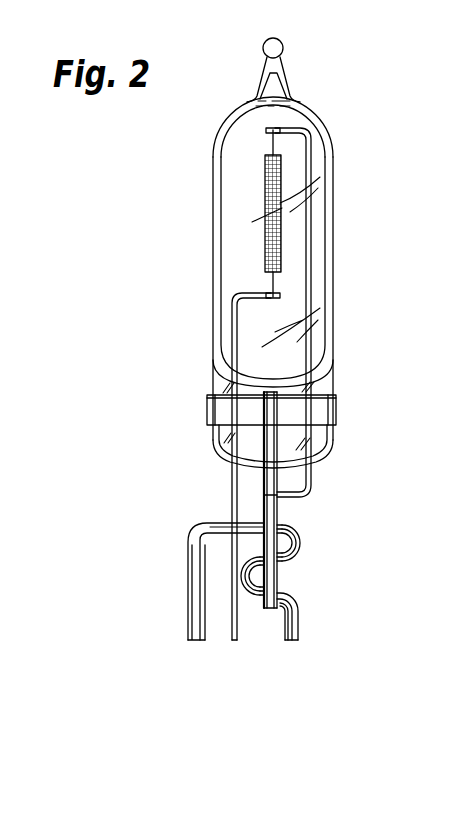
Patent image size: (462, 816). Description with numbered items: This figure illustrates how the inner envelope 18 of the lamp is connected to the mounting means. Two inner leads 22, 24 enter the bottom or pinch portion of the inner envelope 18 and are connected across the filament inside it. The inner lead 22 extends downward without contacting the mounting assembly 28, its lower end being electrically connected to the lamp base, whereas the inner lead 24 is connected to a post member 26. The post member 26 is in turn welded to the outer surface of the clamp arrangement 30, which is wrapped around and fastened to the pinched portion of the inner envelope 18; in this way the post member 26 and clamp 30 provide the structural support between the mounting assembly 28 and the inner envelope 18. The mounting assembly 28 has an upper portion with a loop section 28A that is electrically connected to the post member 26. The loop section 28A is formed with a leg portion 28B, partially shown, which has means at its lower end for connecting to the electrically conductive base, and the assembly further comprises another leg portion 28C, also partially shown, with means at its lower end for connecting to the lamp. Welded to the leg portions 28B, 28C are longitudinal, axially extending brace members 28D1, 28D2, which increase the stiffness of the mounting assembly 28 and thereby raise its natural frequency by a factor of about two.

The inner envelope 18 is at (335, 228).
The clamp arrangement 30 is at (326, 410).
The inner lead 22 is at (232, 477).
The inner lead 24 is at (307, 475).
The post member 26 is at (250, 513).
The mounting assembly 28 is at (322, 578).
The loop section 28A is at (300, 533).
The leg portion 28B is at (300, 626).
The leg portion 28C is at (188, 572).
The brace member 28D1 is at (280, 641).
The brace member 28D2 is at (210, 631).